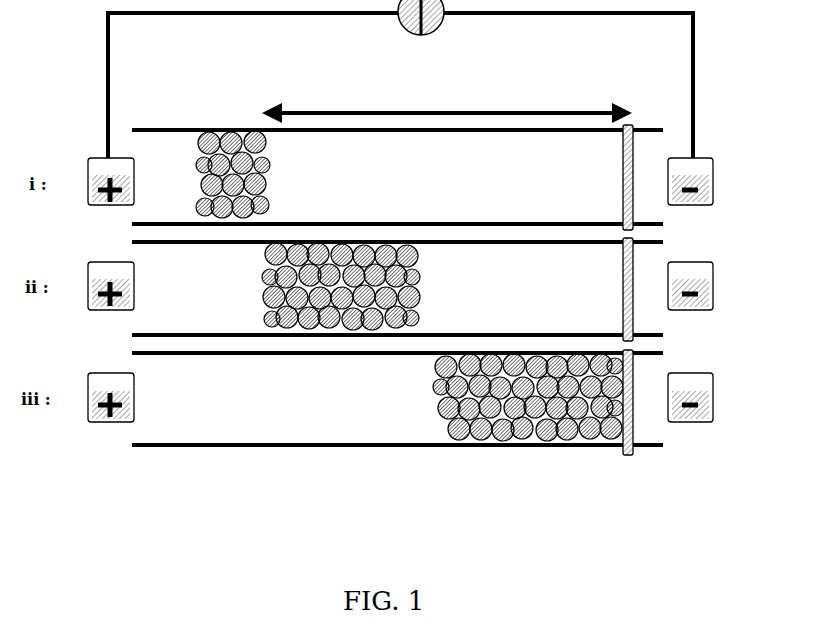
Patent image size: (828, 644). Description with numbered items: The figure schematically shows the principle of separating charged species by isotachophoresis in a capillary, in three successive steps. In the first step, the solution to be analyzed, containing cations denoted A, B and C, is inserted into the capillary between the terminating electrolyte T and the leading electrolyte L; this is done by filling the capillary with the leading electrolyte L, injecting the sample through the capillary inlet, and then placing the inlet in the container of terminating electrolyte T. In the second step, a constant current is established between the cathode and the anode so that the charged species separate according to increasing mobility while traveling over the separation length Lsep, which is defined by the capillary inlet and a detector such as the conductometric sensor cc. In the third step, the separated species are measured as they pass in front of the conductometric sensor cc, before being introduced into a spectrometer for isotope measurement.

The conductometric sensor cc is at (632, 466).
The terminating electrolyte T is at (392, 289).
The leading electrolyte L is at (402, 289).
The separation length Lsep is at (447, 91).